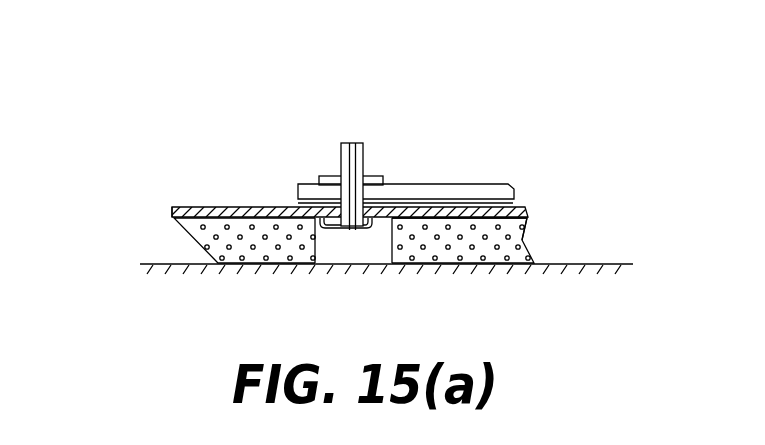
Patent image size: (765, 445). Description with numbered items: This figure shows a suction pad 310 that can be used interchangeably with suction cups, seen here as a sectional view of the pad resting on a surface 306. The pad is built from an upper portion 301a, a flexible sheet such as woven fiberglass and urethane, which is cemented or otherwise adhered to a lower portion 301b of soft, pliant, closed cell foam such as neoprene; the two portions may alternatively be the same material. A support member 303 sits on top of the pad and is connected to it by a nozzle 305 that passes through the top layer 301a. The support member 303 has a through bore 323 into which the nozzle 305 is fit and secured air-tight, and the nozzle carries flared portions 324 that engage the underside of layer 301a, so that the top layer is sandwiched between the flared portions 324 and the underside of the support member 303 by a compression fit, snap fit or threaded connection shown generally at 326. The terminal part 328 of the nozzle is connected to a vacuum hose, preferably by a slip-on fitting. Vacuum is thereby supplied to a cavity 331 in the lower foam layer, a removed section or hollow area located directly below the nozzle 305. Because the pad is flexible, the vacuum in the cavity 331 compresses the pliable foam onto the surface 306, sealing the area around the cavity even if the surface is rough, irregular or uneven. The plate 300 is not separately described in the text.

The plate 300 is at (233, 208).
The upper portion 301a is at (527, 208).
The lower portion 301b is at (523, 240).
The support member 303 is at (443, 185).
The nozzle 305 is at (357, 143).
The surface 306 is at (533, 265).
The suction pad 310 is at (172, 211).
The through bore 323 is at (342, 214).
The flared portions 324 is at (353, 227).
The threaded connection 326 is at (379, 201).
The terminal part 328 is at (331, 140).
The cavity 331 is at (326, 242).